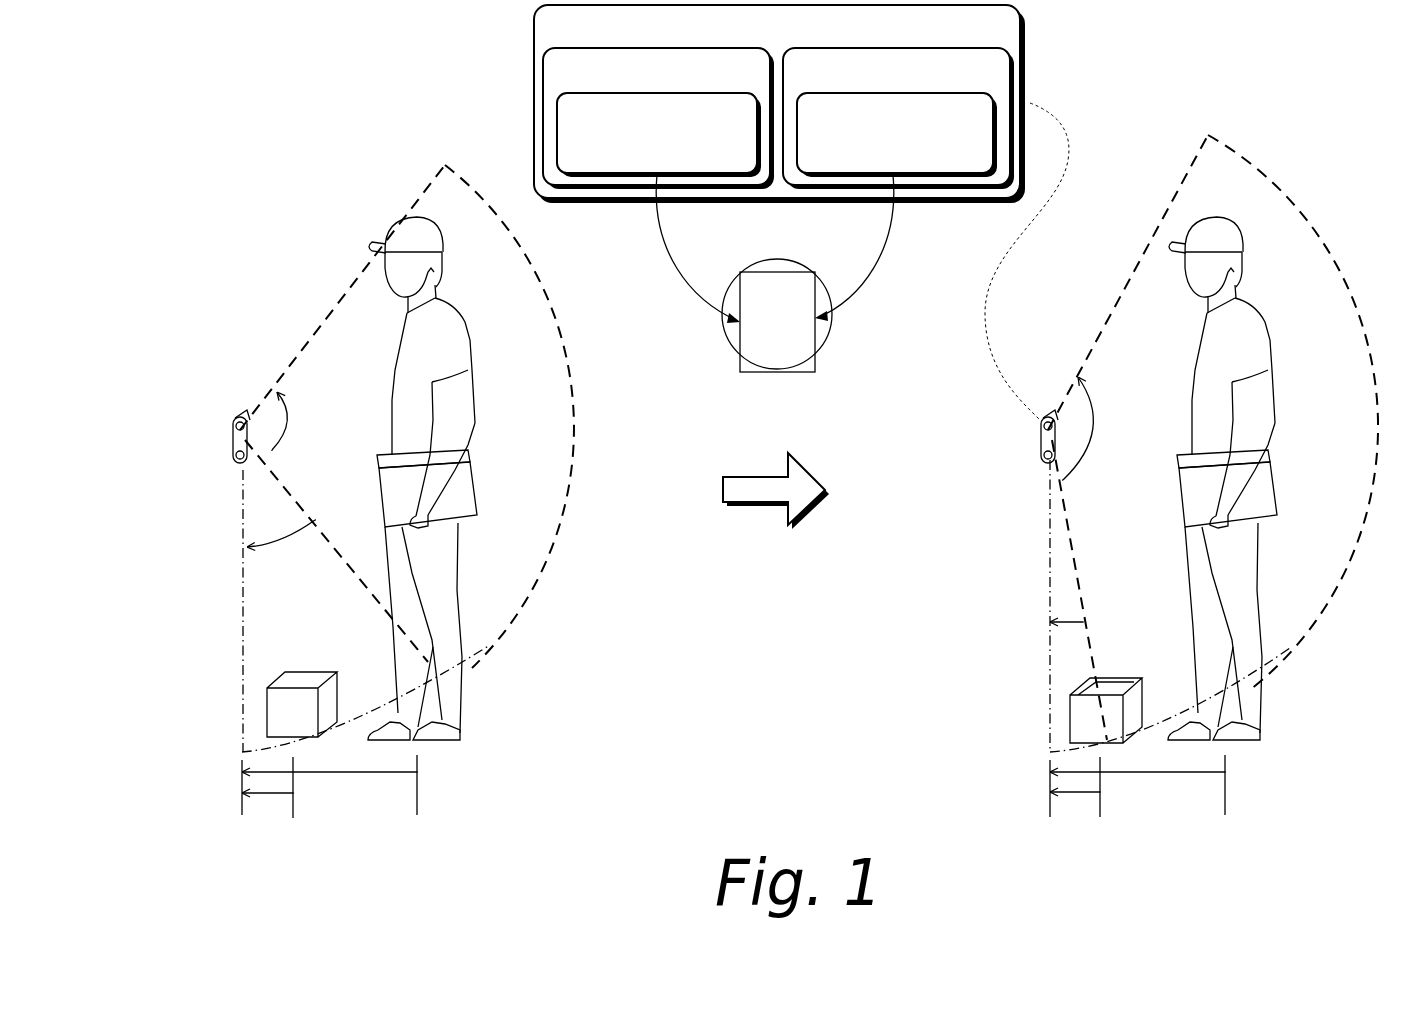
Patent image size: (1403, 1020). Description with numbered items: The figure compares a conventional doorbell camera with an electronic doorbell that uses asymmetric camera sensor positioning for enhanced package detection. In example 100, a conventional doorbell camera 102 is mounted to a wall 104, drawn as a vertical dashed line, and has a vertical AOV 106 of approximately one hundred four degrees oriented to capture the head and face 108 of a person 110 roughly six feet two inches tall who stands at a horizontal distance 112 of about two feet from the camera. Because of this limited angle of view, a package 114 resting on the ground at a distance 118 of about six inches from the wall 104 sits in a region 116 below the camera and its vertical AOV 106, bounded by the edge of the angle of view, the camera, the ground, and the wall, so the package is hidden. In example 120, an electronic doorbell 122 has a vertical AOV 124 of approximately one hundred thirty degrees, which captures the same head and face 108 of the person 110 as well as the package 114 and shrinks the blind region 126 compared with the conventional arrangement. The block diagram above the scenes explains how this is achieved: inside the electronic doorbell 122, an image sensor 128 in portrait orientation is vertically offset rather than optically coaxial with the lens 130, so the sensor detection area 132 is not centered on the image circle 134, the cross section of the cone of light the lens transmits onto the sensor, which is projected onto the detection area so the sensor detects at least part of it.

The example 100 is at (191, 130).
The conventional doorbell camera 102 is at (237, 423).
The wall 104 is at (243, 613).
The vertical AOV 106 is at (291, 399).
The head and face 108 is at (388, 270).
The person 110 is at (447, 300).
The horizontal distance 112 is at (332, 773).
The package 114 is at (302, 672).
The region 116 is at (273, 537).
The distance 118 is at (267, 793).
The example 120 is at (1310, 128).
The electronic doorbell 122 is at (1047, 463).
The vertical AOV 124 is at (1107, 423).
The region 126 is at (1067, 618).
The image sensor 128 is at (658, 118).
The lens 130 is at (898, 118).
The sensor detection area 132 is at (686, 232).
The image circle 134 is at (859, 231).